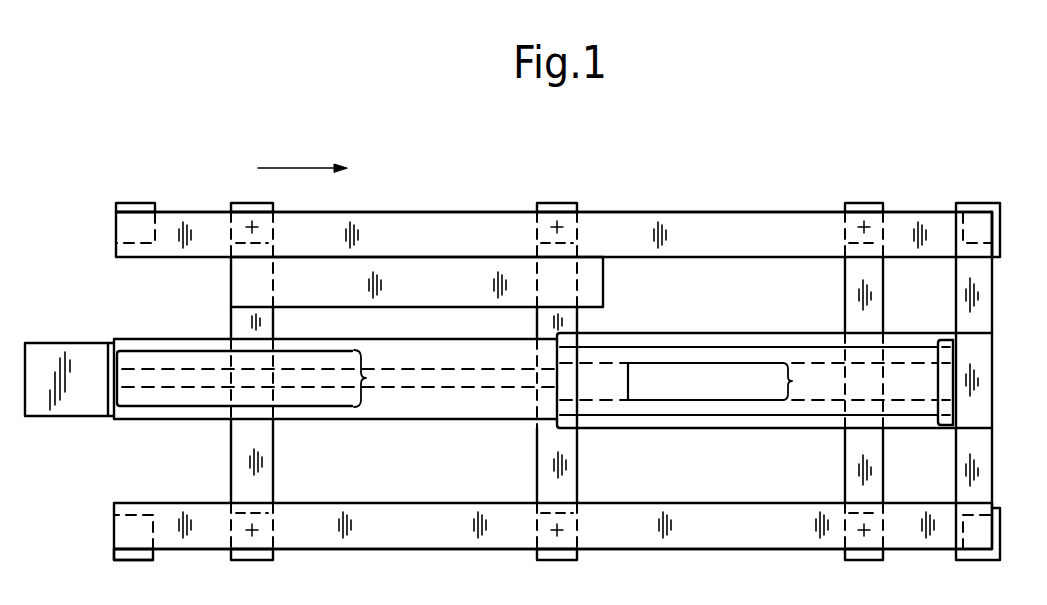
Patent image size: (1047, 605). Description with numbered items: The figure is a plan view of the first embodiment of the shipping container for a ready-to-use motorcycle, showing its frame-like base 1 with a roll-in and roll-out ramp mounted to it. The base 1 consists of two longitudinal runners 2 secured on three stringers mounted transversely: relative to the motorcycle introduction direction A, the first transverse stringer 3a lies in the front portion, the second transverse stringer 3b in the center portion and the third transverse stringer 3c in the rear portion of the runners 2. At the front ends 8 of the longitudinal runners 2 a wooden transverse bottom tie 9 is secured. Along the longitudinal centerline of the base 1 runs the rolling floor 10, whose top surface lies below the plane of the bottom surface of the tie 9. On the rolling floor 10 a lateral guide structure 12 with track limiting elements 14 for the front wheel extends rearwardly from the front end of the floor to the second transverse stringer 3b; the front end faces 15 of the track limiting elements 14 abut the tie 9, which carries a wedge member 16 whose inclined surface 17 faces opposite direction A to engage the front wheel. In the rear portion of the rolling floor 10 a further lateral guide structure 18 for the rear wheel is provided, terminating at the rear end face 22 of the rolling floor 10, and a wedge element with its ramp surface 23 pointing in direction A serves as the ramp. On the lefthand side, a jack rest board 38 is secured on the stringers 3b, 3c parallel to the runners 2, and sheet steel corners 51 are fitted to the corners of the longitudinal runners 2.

The frame-like base 1 is at (479, 194).
The motorcycle introduction direction A is at (291, 169).
The longitudinal runners 2 is at (428, 211).
The first transverse stringer 3a is at (887, 259).
The second transverse stringer 3b is at (585, 323).
The third transverse stringer 3c is at (231, 264).
The jack rest board 38 is at (590, 263).
The front ends of the longitudinal runners 8 is at (1000, 252).
The transverse bottom tie 9 is at (983, 470).
The rolling floor 10 is at (477, 421).
The lateral guide structure 12 is at (749, 381).
The track limiting elements 14 is at (742, 340).
The front end faces 15 is at (955, 417).
The wedge member 16 is at (993, 388).
The inclined surface 17 is at (946, 372).
The lateral guide structure for the rear wheel 18 is at (366, 379).
The rear end face of the rolling floor 22 is at (108, 421).
The ramp surface 23 is at (50, 350).
The sheet steel corners 51 is at (116, 556).